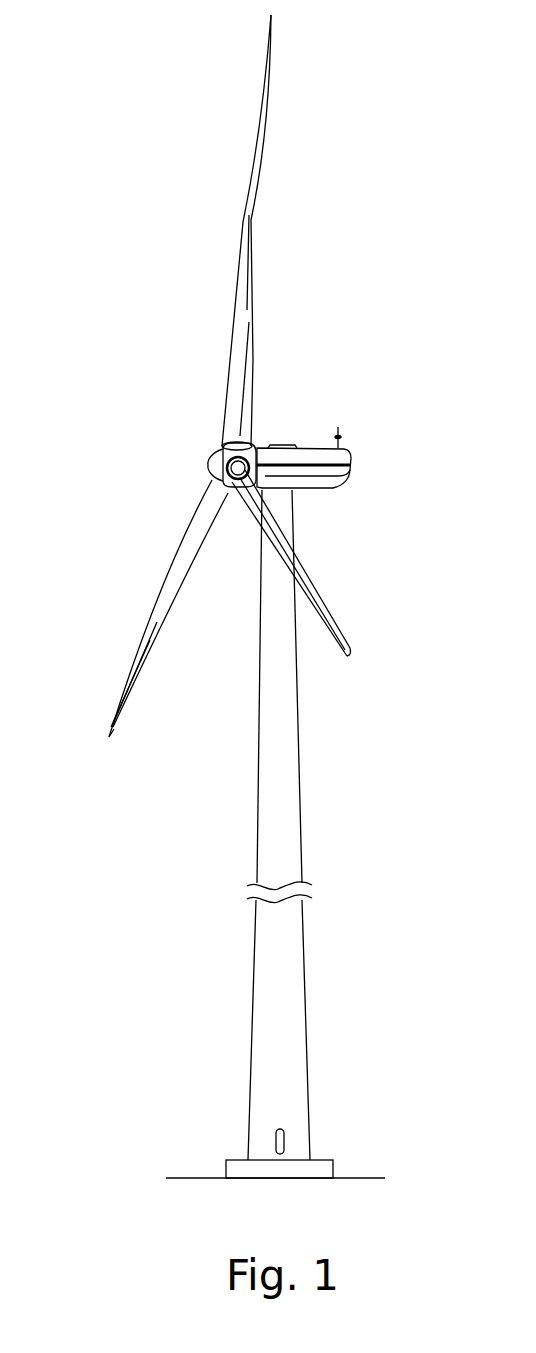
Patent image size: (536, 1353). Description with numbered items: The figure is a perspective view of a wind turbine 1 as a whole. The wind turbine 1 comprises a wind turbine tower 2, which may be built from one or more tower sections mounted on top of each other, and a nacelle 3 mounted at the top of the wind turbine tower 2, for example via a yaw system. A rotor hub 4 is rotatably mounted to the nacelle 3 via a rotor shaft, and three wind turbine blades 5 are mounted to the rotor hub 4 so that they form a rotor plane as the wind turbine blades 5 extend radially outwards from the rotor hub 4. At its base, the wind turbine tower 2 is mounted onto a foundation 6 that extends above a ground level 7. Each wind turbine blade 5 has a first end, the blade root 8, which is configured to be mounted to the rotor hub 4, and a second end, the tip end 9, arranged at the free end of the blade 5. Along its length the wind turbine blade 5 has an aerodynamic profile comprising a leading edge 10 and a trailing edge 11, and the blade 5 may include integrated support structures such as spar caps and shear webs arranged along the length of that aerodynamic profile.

The wind turbine 1 is at (245, 596).
The wind turbine tower 2 is at (282, 823).
The nacelle 3 is at (315, 482).
The rotor hub 4 is at (212, 464).
The wind turbine blade 5 is at (243, 277).
The foundation 6 is at (318, 1170).
The ground level 7 is at (370, 1178).
The blade root 8 is at (248, 440).
The tip end 9 is at (110, 742).
The leading edge 10 is at (167, 567).
The trailing edge 11 is at (250, 323).